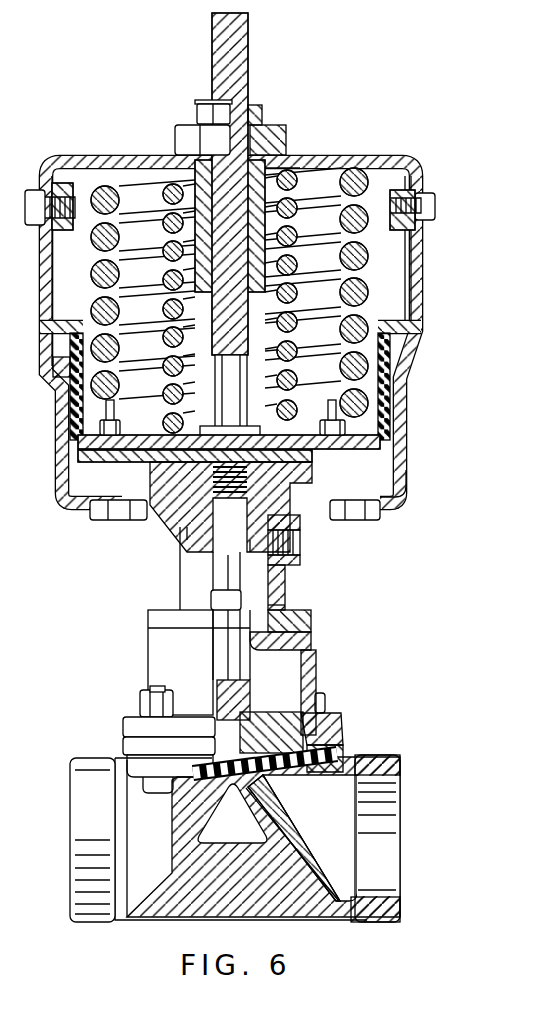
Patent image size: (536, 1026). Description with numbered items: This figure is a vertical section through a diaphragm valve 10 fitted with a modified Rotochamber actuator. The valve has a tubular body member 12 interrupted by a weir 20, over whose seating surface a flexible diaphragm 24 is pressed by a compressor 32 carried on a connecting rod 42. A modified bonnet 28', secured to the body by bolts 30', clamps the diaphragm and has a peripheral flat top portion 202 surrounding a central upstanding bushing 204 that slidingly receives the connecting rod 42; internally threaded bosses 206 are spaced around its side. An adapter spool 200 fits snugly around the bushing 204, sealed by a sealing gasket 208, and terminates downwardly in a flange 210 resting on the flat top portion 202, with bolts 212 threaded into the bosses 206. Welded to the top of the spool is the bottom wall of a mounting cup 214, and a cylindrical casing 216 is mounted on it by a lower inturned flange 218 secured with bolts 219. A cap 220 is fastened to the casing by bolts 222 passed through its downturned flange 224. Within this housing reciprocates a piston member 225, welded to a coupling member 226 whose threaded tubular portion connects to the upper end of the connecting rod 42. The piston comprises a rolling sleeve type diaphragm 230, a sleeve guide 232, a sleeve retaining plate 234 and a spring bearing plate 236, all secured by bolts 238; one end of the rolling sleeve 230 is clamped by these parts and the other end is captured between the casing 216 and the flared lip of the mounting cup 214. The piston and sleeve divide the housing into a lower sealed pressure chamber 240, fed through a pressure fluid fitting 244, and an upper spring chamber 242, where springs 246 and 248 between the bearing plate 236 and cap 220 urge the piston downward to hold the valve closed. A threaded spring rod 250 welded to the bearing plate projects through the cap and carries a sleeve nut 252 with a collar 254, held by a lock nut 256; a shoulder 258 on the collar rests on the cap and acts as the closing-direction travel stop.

The valve 10 is at (372, 729).
The body member 12 is at (398, 770).
The weir 20 is at (232, 793).
The diaphragm 24 is at (270, 778).
The bonnet 28' is at (330, 711).
The bolts 30' is at (159, 732).
The compressor 32 is at (291, 732).
The connecting rod 42 is at (252, 684).
The adapter spool 200 is at (178, 580).
The flat top portion 202 is at (311, 618).
The bushing 204 is at (280, 582).
The internally threaded bosses 206 is at (214, 660).
The sealing gasket 208 is at (284, 608).
The flange 210 is at (148, 618).
The bolts 212 is at (211, 600).
The mounting cup 214 is at (398, 477).
The cylindrical casing 216 is at (408, 406).
The lower inturned flange 218 is at (380, 506).
The bolts 219 is at (100, 517).
The cap 220 is at (117, 157).
The bolts 222 is at (436, 205).
The downturned flange 224 is at (413, 238).
The piston member 225 is at (80, 467).
The coupling member 226 is at (160, 470).
The rolling sleeve type diaphragm 230 is at (405, 321).
The sleeve guide 232 is at (344, 357).
The sleeve retaining plate 234 is at (400, 458).
The spring bearing plate 236 is at (300, 425).
The bolts 238 is at (121, 432).
The pressure chamber 240 is at (371, 484).
The spring chamber 242 is at (408, 287).
The pressure fluid fitting 244 is at (302, 545).
The spring 246 is at (93, 244).
The spring 248 is at (164, 279).
The spring rod 250 is at (296, 330).
The sleeve nut 252 is at (298, 254).
The collar 254 is at (283, 128).
The lock nut 256 is at (262, 104).
The shoulder 258 is at (286, 160).